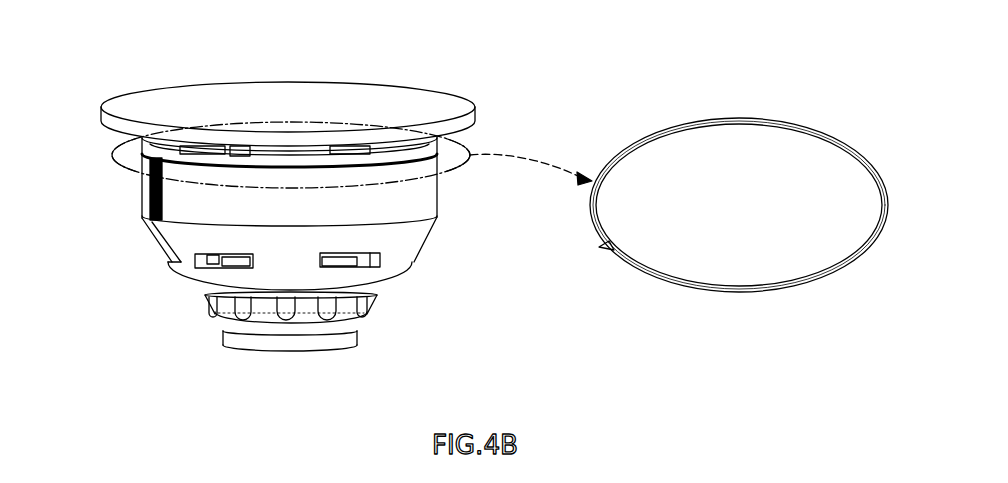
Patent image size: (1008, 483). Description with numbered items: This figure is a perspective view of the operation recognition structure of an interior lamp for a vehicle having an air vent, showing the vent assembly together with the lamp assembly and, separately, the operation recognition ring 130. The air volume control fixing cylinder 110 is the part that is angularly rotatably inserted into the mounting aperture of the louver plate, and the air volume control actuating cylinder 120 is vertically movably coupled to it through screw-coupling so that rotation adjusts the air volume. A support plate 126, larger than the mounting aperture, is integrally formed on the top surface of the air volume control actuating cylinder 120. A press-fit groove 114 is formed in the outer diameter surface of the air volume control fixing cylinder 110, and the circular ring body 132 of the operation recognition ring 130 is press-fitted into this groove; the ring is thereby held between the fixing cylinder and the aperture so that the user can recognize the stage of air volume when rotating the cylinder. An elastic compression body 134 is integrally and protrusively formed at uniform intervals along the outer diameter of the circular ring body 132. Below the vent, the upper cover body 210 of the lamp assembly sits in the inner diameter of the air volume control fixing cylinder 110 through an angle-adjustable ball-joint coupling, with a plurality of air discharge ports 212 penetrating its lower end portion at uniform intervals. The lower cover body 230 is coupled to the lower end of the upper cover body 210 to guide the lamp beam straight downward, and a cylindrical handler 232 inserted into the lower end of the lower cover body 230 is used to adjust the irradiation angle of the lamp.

The air volume control fixing cylinder 110 is at (128, 186).
The press-fit groove 114 is at (443, 137).
The air volume control actuating cylinder 120 is at (224, 165).
The support plate 126 is at (291, 92).
The operation recognition ring 130 is at (738, 104).
The circular ring body 132 is at (634, 143).
The elastic compression body 134 is at (600, 246).
The upper cover body 210 is at (407, 237).
The air discharge port 212 is at (340, 267).
The lower cover body 230 is at (372, 298).
The handler 232 is at (357, 341).